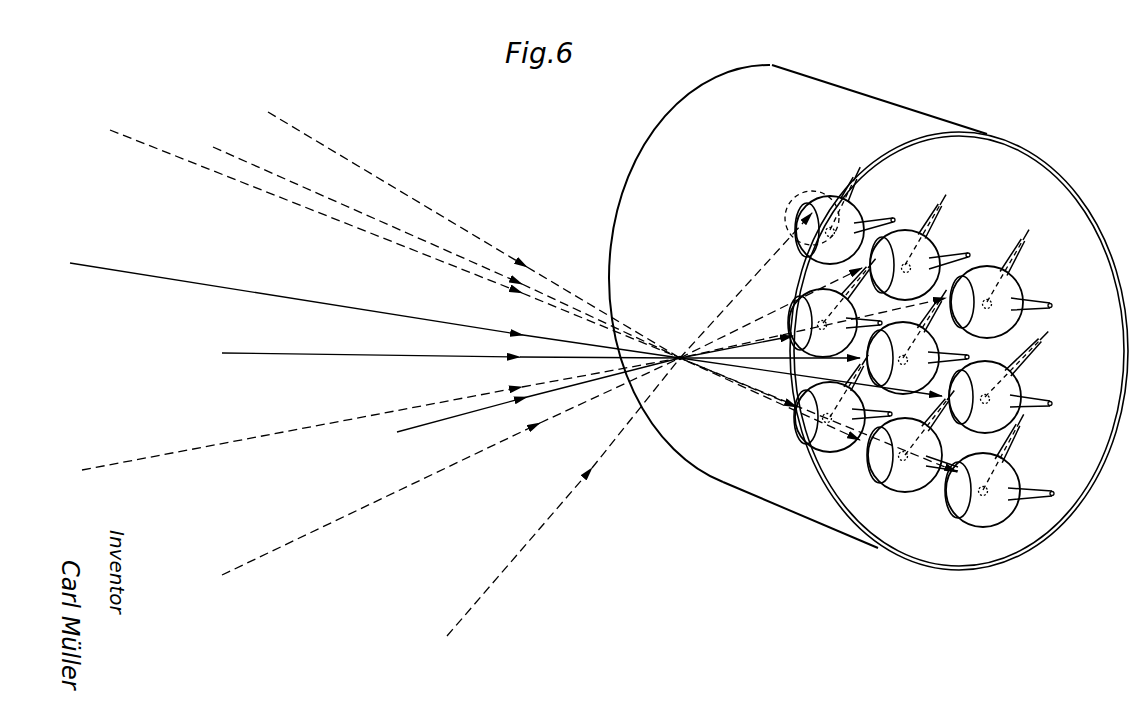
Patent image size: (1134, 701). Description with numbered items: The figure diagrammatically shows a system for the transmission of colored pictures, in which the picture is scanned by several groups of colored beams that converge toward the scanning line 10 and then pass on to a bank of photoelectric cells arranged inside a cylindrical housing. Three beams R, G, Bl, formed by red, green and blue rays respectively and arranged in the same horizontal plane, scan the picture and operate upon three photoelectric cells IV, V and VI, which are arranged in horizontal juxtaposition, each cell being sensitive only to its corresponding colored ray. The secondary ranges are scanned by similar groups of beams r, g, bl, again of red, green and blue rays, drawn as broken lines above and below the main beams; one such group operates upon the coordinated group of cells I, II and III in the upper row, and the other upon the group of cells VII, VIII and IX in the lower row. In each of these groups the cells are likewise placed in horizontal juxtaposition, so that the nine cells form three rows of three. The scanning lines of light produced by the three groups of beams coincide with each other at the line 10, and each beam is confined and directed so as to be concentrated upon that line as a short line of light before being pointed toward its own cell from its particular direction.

The helical line 10 is at (681, 361).
The photoelectric cell I is at (845, 215).
The photoelectric cell II is at (920, 247).
The photoelectric cell III is at (1001, 284).
The photoelectric cell IV is at (835, 308).
The photoelectric cell V is at (918, 342).
The photoelectric cell VI is at (1000, 382).
The photoelectric cell VII is at (843, 403).
The photoelectric cell VIII is at (912, 442).
The photoelectric cell IX is at (999, 470).
The red ray beam r is at (509, 300).
The green ray beam g is at (529, 358).
The blue ray beam bl is at (544, 380).
The red beam R is at (495, 324).
The green beam G is at (530, 352).
The blue beam Bl is at (586, 392).